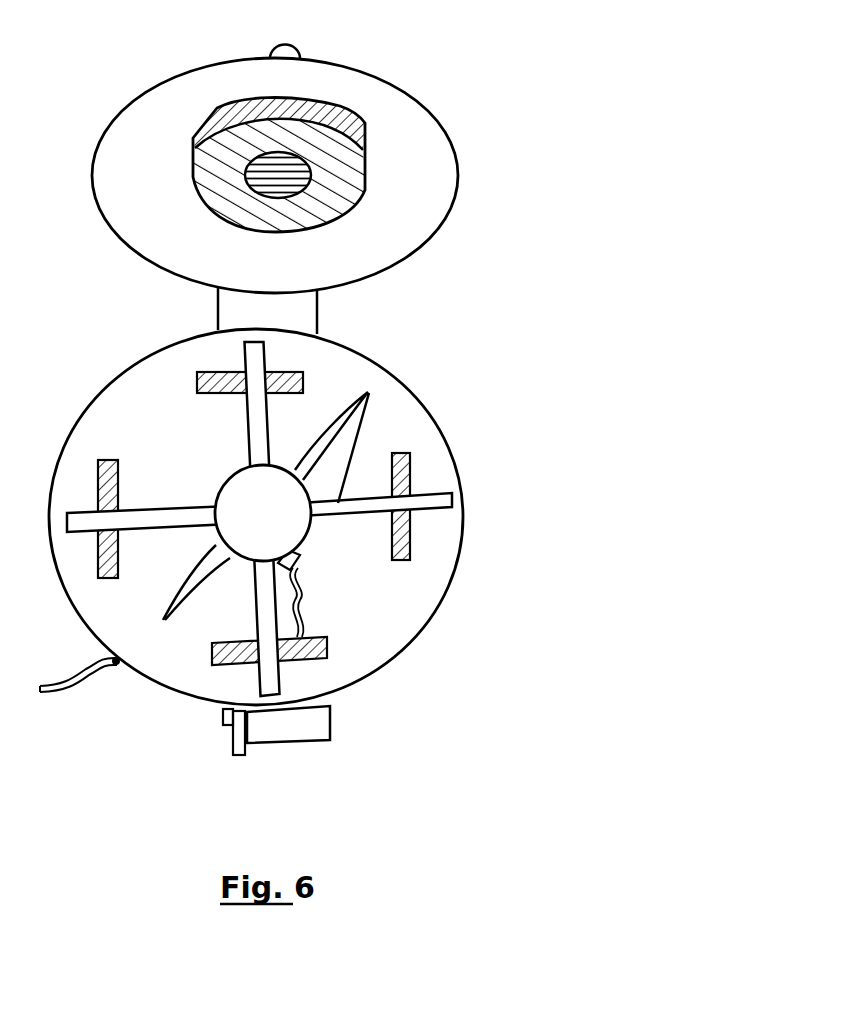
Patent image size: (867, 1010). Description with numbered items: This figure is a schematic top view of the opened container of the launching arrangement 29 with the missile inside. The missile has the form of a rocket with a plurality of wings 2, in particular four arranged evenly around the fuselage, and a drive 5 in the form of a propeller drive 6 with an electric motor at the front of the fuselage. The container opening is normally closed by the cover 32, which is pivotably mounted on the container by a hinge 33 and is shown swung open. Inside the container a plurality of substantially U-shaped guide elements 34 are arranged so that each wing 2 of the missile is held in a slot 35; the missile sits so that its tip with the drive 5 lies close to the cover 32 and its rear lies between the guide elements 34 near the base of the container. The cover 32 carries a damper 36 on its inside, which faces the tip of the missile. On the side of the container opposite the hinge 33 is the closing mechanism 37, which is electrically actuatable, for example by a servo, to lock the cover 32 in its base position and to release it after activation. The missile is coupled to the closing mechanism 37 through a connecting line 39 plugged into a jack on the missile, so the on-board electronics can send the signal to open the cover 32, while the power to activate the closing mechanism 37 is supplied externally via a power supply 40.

The wing 2 is at (299, 519).
The drive 5 is at (356, 459).
The propeller drive 6 is at (295, 497).
The launching arrangement 29 is at (285, 443).
The cover 32 is at (407, 140).
The hinge 33 is at (305, 310).
The guide element 34 is at (197, 388).
The slot 35 is at (407, 485).
The damper 36 is at (308, 135).
The closing mechanism 37 is at (340, 757).
The connecting line 39 is at (303, 600).
The power supply 40 is at (70, 677).